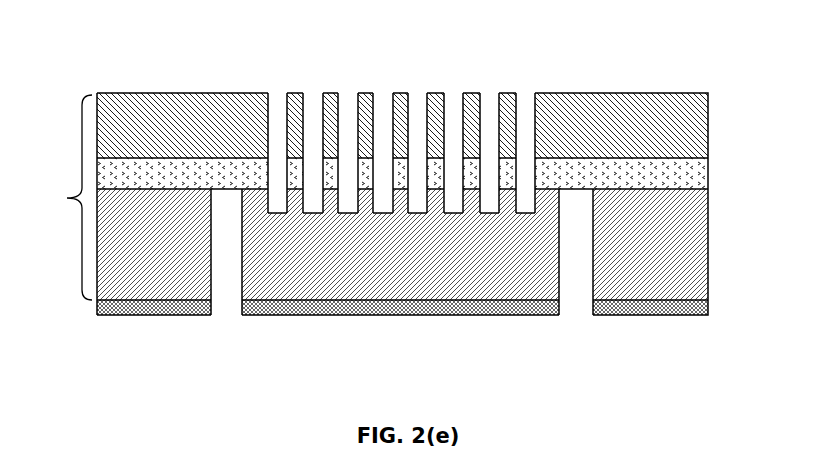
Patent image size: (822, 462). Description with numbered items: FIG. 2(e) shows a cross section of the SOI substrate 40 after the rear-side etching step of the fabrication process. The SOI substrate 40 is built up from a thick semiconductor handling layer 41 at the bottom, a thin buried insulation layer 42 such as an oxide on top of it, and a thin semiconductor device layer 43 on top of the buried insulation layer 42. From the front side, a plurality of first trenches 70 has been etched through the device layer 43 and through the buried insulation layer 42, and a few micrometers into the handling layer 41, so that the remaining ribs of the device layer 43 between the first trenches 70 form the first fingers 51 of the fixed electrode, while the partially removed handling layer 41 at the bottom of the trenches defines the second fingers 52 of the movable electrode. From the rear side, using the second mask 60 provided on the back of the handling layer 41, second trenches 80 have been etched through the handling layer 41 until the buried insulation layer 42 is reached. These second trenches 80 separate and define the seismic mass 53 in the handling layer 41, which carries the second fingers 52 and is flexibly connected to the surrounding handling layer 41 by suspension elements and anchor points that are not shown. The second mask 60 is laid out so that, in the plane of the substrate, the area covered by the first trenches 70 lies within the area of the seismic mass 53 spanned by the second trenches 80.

The SOI substrate 40 is at (62, 197).
The handling layer 41 is at (665, 232).
The buried insulation layer 42 is at (678, 177).
The device layer 43 is at (665, 130).
The first fingers 51 is at (373, 115).
The second fingers 52 is at (508, 205).
The seismic mass 53 is at (401, 256).
The second mask 60 is at (605, 313).
The first trenches 70 is at (313, 108).
The second trenches 80 is at (402, 252).